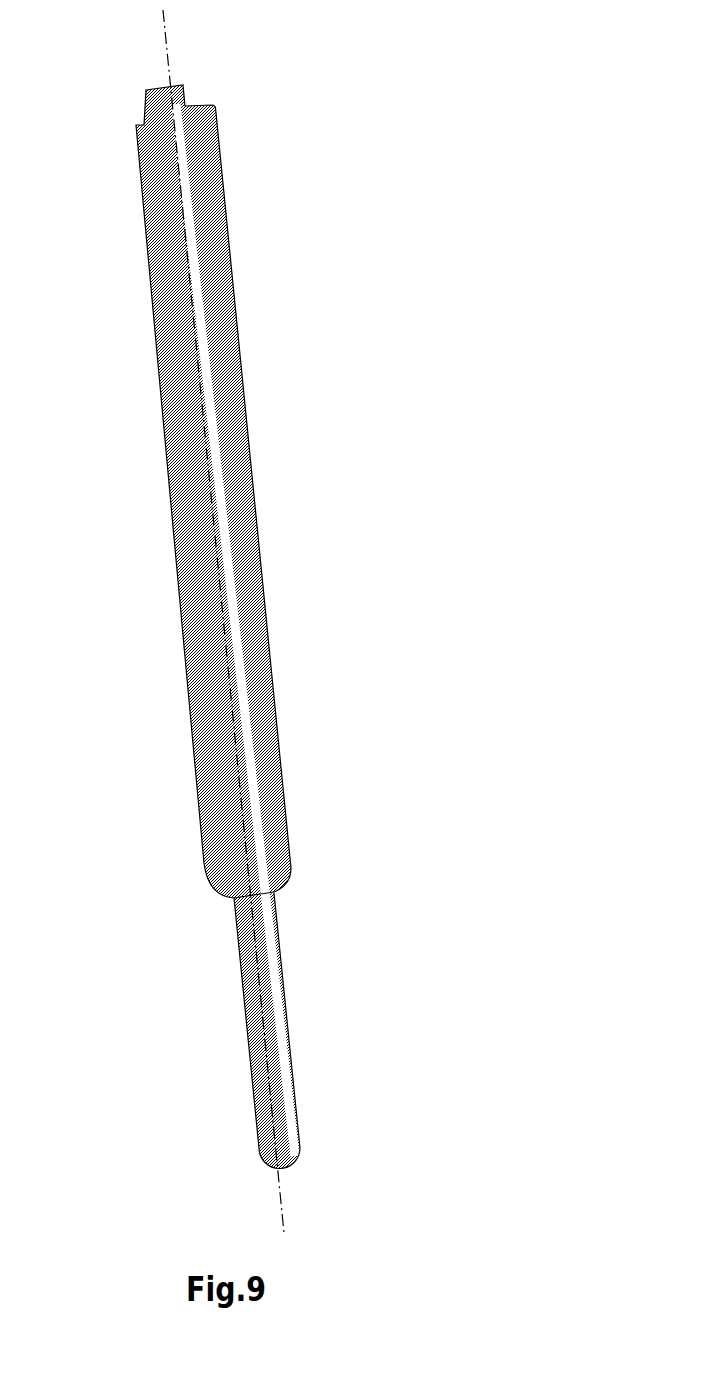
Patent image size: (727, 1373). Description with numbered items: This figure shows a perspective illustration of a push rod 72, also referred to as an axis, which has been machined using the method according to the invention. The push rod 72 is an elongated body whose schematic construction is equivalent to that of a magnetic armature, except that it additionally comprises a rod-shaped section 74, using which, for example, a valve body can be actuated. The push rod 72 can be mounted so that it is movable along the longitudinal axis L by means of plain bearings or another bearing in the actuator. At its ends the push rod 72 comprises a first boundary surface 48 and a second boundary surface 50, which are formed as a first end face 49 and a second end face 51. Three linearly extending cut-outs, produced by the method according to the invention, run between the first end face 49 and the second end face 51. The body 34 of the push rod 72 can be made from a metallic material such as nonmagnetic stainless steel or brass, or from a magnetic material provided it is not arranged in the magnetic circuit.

The push rod 72 is at (251, 621).
The shaft 34 is at (277, 487).
The first boundary surface 48 is at (230, 116).
The first end face 49 is at (176, 77).
The second boundary surface 50 is at (311, 879).
The second end face 51 is at (281, 879).
The rod-shaped section 74 is at (237, 1018).
The longitudinal axis L is at (153, 18).